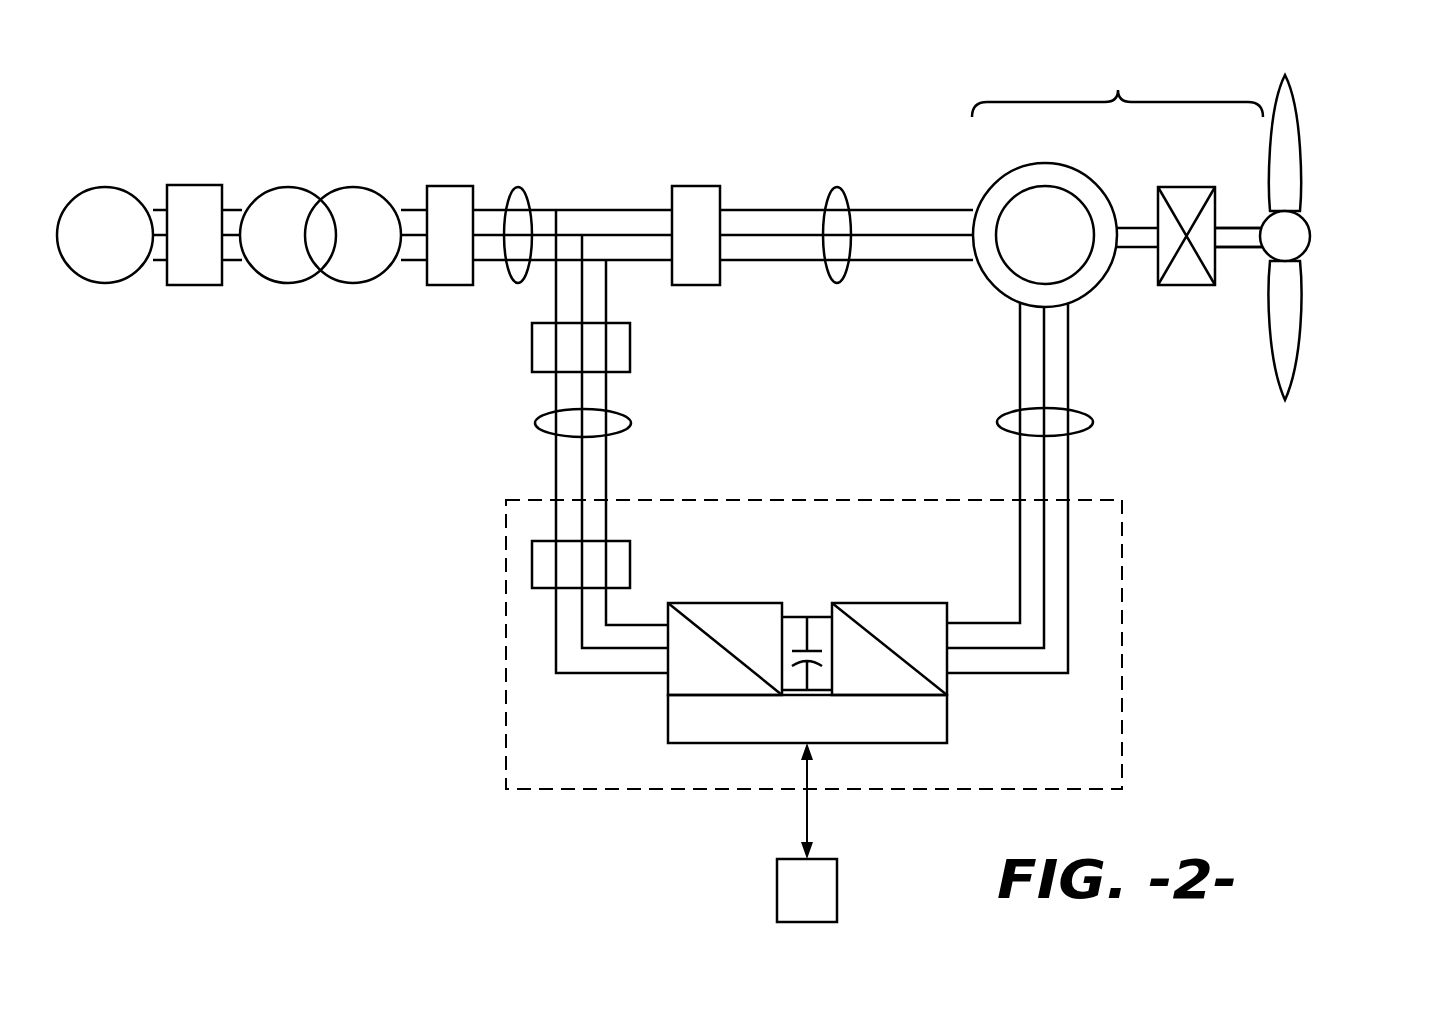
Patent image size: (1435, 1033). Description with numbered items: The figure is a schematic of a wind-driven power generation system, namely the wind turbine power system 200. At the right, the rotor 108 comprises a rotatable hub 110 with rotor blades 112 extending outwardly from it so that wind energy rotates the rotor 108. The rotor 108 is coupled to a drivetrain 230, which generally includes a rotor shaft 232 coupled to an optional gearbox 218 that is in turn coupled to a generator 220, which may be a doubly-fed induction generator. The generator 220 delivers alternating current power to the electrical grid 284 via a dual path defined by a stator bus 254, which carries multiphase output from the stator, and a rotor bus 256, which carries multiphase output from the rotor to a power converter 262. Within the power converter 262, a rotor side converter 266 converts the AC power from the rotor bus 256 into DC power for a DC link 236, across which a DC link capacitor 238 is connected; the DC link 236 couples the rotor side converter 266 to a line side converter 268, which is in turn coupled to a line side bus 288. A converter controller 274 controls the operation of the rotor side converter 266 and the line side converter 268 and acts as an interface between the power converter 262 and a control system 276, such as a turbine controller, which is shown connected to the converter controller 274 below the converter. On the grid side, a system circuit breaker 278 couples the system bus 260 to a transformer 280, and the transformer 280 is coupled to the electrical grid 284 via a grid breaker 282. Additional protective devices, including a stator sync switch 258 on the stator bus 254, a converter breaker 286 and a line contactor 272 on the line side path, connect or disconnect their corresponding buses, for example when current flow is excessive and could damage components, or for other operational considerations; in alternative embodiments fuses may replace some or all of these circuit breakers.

The rotor 108 is at (1345, 239).
The rotatable hub 110 is at (1313, 230).
The rotor blade 112 is at (1300, 158).
The wind turbine power system 200 is at (362, 627).
The gearbox 218 is at (1185, 187).
The generator 220 is at (1105, 190).
The drivetrain 230 is at (1117, 85).
The rotor shaft 232 is at (1245, 248).
The DC link 236 is at (817, 617).
The DC link capacitor 238 is at (793, 648).
The stator bus 254 is at (837, 187).
The rotor bus 256 is at (1093, 420).
The stator sync switch 258 is at (695, 186).
The system bus 260 is at (518, 187).
The power converter 262 is at (1122, 607).
The rotor side converter 266 is at (947, 683).
The line side converter 268 is at (668, 683).
The line contactor 272 is at (532, 567).
The converter controller 274 is at (715, 745).
The control system 276 is at (837, 885).
The system circuit breaker 278 is at (447, 186).
The transformer 280 is at (350, 187).
The grid breaker 282 is at (188, 185).
The electrical grid 284 is at (103, 186).
The converter breaker 286 is at (532, 352).
The line side bus 288 is at (536, 427).